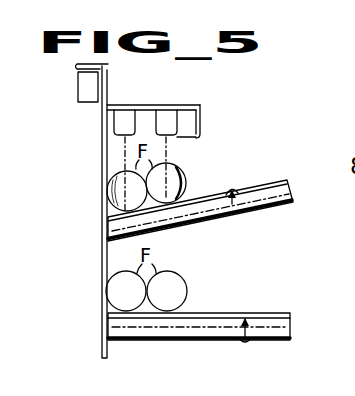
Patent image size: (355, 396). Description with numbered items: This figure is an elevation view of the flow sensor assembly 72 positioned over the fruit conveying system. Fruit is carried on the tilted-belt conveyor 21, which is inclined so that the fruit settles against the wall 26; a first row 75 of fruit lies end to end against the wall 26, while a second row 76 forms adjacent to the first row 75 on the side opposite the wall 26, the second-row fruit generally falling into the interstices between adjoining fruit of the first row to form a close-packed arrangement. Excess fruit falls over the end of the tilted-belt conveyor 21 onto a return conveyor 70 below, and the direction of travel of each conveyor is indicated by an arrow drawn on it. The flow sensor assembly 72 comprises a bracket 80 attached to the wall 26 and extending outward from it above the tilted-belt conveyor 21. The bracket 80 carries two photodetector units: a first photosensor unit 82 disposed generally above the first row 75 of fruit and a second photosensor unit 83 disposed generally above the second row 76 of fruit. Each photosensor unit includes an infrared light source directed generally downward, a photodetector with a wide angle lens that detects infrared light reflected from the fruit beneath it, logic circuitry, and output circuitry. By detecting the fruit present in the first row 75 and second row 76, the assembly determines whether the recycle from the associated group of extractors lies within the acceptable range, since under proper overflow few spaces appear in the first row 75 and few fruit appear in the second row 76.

The tilted-belt conveyor 21 is at (205, 222).
The wall 26 is at (101, 255).
The return conveyor 70 is at (161, 340).
The flow sensor assembly 72 is at (150, 101).
The first row 75 is at (120, 190).
The second row 76 is at (172, 180).
The bracket 80 is at (198, 108).
The first photosensor unit 82 is at (118, 127).
The second photosensor unit 83 is at (177, 137).